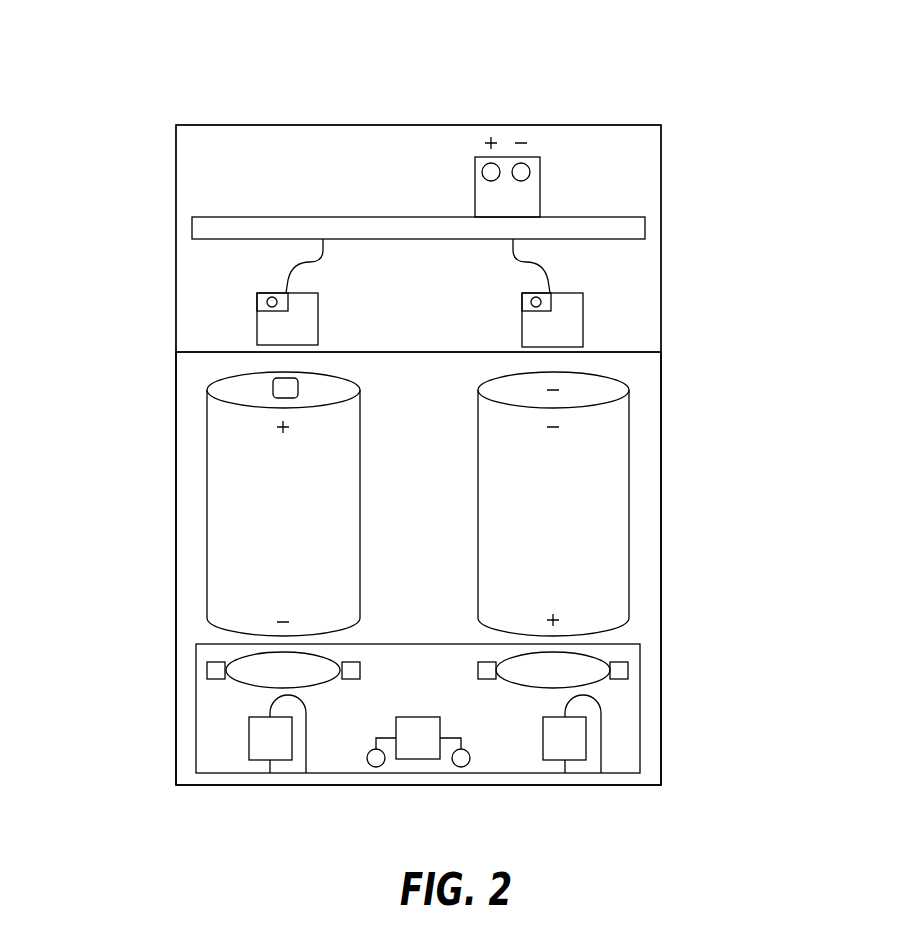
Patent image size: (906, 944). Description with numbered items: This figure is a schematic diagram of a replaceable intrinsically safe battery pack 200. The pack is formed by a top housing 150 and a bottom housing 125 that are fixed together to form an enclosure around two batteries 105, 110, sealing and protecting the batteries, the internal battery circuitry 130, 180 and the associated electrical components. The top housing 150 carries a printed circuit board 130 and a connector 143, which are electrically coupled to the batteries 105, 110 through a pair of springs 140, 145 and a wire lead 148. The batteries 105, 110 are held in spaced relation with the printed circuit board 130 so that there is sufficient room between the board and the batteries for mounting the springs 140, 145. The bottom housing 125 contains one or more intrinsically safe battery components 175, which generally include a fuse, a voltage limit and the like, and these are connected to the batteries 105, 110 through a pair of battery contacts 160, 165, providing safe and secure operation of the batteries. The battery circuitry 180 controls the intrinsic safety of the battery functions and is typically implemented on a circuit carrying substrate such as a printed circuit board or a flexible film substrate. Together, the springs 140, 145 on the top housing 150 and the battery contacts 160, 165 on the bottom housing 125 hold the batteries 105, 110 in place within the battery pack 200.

The replaceable intrinsically safe battery pack 200 is at (190, 64).
The top housing 150 is at (661, 153).
The printed circuit board 130 is at (645, 228).
The connector 143 is at (475, 186).
The wire lead 148 is at (513, 253).
The spring 145 is at (278, 293).
The spring 140 is at (522, 302).
The battery 105 is at (207, 545).
The battery 110 is at (629, 548).
The bottom housing 125 is at (661, 445).
The battery contact 160 is at (207, 670).
The battery contact 165 is at (628, 670).
The intrinsically safe battery components 175 is at (614, 750).
The battery circuitry 180 is at (607, 695).